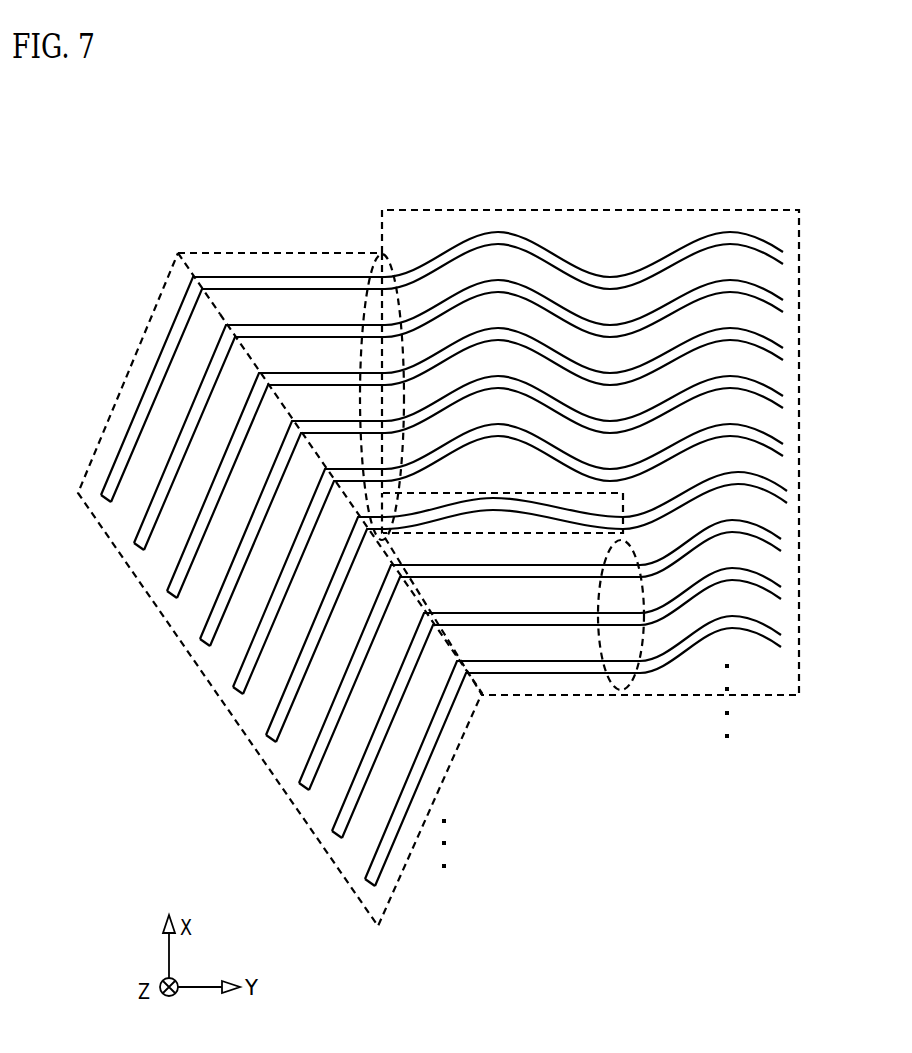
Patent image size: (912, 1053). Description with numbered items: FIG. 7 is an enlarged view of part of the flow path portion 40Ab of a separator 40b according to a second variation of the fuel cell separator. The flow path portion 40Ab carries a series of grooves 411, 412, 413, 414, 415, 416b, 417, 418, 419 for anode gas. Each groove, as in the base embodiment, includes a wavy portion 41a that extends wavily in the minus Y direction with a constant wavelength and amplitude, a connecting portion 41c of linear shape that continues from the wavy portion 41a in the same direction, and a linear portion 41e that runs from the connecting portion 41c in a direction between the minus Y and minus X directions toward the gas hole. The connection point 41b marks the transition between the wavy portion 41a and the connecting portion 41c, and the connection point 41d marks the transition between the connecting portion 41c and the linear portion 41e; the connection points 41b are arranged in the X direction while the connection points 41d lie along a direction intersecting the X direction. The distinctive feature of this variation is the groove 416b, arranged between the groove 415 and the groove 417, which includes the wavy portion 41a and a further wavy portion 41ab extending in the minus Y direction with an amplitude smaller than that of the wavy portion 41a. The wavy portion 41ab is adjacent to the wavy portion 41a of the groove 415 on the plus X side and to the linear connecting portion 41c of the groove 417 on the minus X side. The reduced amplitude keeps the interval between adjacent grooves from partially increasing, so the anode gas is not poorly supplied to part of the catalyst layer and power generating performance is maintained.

The separator 40b is at (809, 137).
The flow path portion 40Ab is at (833, 192).
The wavy portion 41a is at (488, 209).
The connection point 41b is at (372, 254).
The connecting portion 41c is at (258, 253).
The connection point 41d is at (176, 257).
The linear portion 41e is at (125, 373).
The wavy portion 41ab is at (503, 503).
The groove 411 is at (797, 231).
The groove 412 is at (797, 279).
The groove 413 is at (797, 326).
The groove 414 is at (797, 374).
The groove 415 is at (797, 422).
The groove 416b is at (797, 469).
The groove 417 is at (797, 517).
The eighth wiring line 418 is at (797, 565).
The ninth wiring line 419 is at (797, 612).